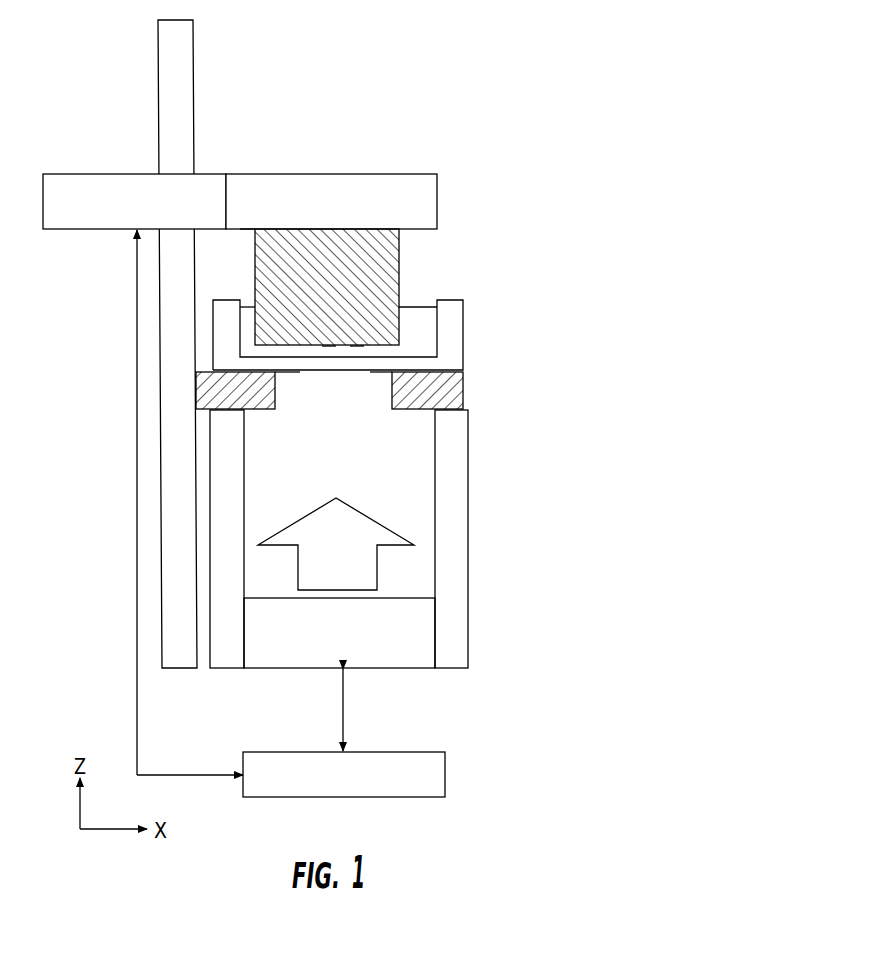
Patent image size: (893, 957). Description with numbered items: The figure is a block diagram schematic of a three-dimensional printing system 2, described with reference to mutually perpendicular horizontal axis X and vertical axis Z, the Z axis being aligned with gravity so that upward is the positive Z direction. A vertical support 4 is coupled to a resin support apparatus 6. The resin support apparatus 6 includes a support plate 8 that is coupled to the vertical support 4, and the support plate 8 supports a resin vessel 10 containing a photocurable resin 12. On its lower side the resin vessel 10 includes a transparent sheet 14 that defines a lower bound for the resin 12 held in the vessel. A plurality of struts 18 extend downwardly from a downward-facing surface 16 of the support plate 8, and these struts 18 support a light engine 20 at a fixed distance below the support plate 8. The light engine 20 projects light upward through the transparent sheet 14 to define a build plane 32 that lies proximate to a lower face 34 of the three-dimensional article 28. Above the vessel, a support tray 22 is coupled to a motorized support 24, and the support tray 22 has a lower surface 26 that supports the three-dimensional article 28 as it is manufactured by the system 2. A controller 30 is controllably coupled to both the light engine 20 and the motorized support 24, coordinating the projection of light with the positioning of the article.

The three-dimensional printing system 2 is at (471, 102).
The vertical support 4 is at (193, 57).
The resin support apparatus 6 is at (508, 333).
The support plate 8 is at (455, 389).
The resin vessel 10 is at (452, 315).
The photocurable resin 12 is at (412, 312).
The transparent sheet 14 is at (292, 373).
The downward-facing surface 16 is at (412, 408).
The struts 18 is at (233, 488).
The light engine 20 is at (428, 622).
The support tray 22 is at (427, 196).
The motorized support 24 is at (63, 185).
The lower surface 26 is at (246, 230).
The three-dimensional article 28 is at (396, 250).
The controller 30 is at (438, 772).
The build plane 32 is at (330, 350).
The lower face 34 is at (357, 350).